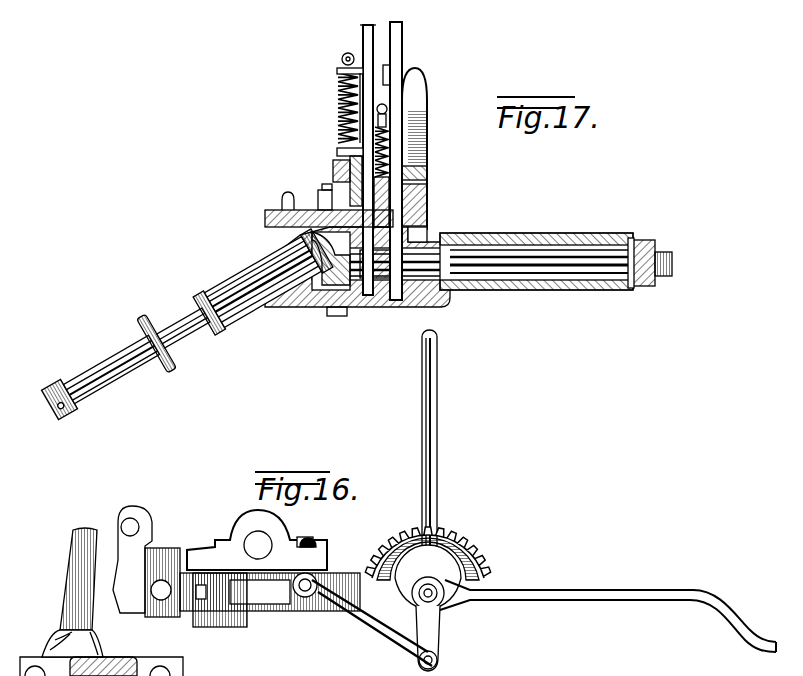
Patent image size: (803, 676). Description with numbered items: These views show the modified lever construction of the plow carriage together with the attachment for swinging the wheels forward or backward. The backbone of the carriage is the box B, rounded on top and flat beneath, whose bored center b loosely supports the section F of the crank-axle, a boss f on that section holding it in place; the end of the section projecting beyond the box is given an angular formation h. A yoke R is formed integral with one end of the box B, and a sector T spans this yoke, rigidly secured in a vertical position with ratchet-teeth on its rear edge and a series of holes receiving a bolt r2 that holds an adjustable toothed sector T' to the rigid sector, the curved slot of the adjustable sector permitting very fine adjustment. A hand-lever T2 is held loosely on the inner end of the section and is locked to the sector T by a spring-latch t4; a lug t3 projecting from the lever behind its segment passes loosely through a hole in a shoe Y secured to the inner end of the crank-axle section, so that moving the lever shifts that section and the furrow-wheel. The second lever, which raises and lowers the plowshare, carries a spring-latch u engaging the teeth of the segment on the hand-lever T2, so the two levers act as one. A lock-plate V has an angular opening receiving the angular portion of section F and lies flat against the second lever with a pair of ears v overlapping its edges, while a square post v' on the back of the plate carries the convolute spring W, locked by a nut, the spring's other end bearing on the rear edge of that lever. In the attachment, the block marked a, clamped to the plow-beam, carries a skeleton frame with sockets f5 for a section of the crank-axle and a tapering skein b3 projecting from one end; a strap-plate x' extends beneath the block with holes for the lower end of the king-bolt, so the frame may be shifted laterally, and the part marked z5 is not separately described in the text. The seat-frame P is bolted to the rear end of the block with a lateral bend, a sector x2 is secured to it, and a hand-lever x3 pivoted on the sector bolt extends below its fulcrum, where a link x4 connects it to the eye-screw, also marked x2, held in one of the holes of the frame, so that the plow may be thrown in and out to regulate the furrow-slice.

In FIG. 17, the hand-lever T2 is at (363, 37).
In FIG. 17, the lock-plate V is at (402, 48).
In FIG. 17, the convolute spring W is at (427, 108).
In FIG. 17, the spring-latch t4 is at (336, 118).
In FIG. 17, the adjustable toothed sector T' is at (339, 151).
In FIG. 17, the spring-latch u is at (388, 150).
In FIG. 17, the ears v is at (425, 172).
In FIG. 17, the square post v' is at (426, 205).
In FIG. 17, the bolt r2 is at (333, 172).
In FIG. 17, the sector T is at (316, 197).
In FIG. 17, the shoe Y is at (283, 196).
In FIG. 17, the lug t3 is at (272, 216).
In FIG. 17, the angular formation h is at (428, 245).
In FIG. 17, the box B is at (536, 258).
In FIG. 17, the bored center b is at (514, 282).
In FIG. 17, the section of the crank-axle F is at (584, 290).
In FIG. 17, the boss f is at (657, 278).
In FIG. 16, the boss f is at (257, 540).
In FIG. 17, the yoke R is at (357, 281).
In FIG. 16, the tapering skein b3 is at (82, 528).
In FIG. 16, the bracket z5 is at (168, 548).
In FIG. 16, the hand-lever x3 is at (318, 548).
In FIG. 16, the sector x2 is at (490, 540).
In FIG. 16, the strap-plate x' is at (220, 612).
In FIG. 16, the bar a is at (284, 612).
In FIG. 16, the link x4 is at (372, 630).
In FIG. 16, the sockets f5 is at (125, 656).
In FIG. 16, the seat-frame P is at (608, 616).